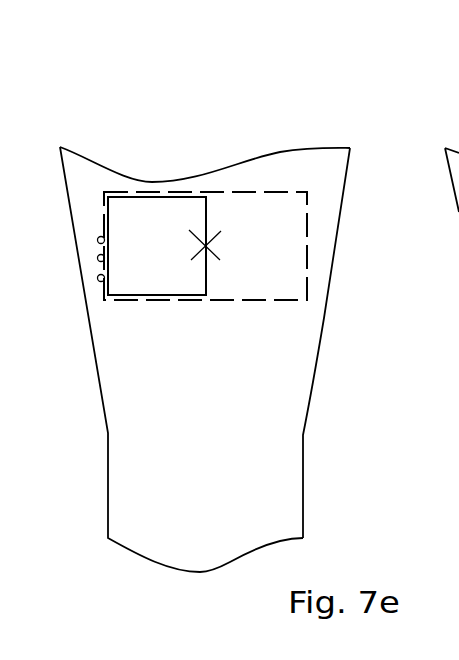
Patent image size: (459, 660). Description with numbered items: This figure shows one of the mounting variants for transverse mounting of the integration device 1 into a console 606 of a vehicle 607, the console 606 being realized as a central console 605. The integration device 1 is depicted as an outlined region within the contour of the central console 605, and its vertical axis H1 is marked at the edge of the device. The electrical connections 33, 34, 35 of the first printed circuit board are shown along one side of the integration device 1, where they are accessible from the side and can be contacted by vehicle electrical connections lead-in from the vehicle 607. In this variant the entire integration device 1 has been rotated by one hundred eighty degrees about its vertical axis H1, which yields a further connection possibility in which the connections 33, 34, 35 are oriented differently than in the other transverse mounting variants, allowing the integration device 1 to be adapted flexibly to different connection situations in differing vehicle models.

The vehicle 607 is at (113, 120).
The console 606 is at (256, 154).
The central console 605 is at (302, 150).
The integration device 1 is at (232, 300).
The vertical axis H1 is at (207, 245).
The electrical connection 33 is at (98, 240).
The electrical connection 34 is at (98, 258).
The electrical connection 35 is at (98, 279).